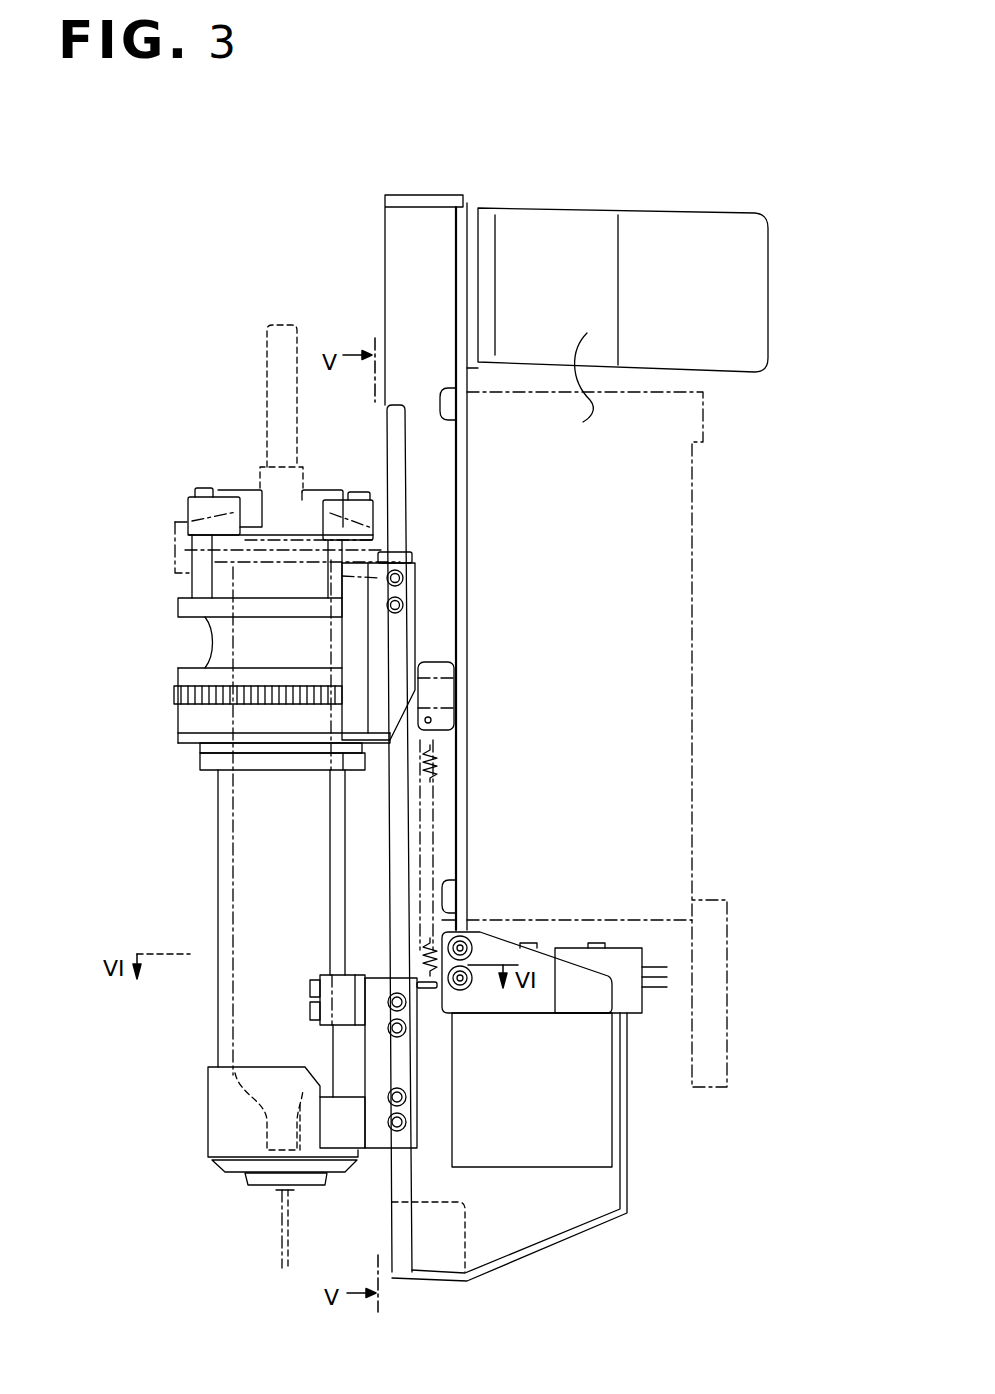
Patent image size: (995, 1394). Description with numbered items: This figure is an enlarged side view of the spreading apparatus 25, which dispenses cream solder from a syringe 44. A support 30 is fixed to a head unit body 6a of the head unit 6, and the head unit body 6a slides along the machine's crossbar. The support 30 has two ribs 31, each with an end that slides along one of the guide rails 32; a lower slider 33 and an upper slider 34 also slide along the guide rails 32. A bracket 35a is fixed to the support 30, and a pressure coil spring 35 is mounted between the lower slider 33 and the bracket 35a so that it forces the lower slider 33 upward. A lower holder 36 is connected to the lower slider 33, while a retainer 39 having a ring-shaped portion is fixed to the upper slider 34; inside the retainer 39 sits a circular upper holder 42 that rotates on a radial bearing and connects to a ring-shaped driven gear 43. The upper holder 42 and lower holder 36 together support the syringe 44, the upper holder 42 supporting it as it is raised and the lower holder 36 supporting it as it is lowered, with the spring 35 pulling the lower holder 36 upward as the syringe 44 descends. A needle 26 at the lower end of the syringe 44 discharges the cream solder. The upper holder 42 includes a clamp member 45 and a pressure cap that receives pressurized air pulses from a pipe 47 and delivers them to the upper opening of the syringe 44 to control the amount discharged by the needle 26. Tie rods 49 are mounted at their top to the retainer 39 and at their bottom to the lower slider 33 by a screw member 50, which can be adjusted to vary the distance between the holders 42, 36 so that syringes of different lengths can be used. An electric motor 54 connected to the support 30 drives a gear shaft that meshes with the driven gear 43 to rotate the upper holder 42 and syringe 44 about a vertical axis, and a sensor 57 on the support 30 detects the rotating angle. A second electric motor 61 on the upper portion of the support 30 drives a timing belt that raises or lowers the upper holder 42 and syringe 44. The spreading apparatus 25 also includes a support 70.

The head unit 6 is at (492, 209).
The head unit body 6a is at (692, 515).
The spreading apparatus 25 is at (372, 270).
The needle 26 is at (272, 1243).
The support 30 is at (456, 580).
The ribs 31 is at (435, 448).
The guide rails 32 is at (398, 498).
The lower slider 33 is at (383, 1133).
The upper slider 34 is at (402, 630).
The pressure coil spring 35 is at (440, 772).
The bracket 35a is at (452, 697).
The lower holder 36 is at (233, 1132).
The retainer 39 is at (180, 718).
The upper holder 42 is at (205, 670).
The driven gear 43 is at (175, 690).
The syringe 44 is at (236, 1023).
The clamp member 45 is at (196, 504).
The pipe 47 is at (265, 405).
The tie rods 49 is at (333, 850).
The screw member 50 is at (318, 981).
The electric motor 54 is at (515, 1122).
The sensor 57 is at (625, 948).
The electric motor (upper/lower drive means) 61 is at (588, 395).
The support 70 is at (467, 1233).